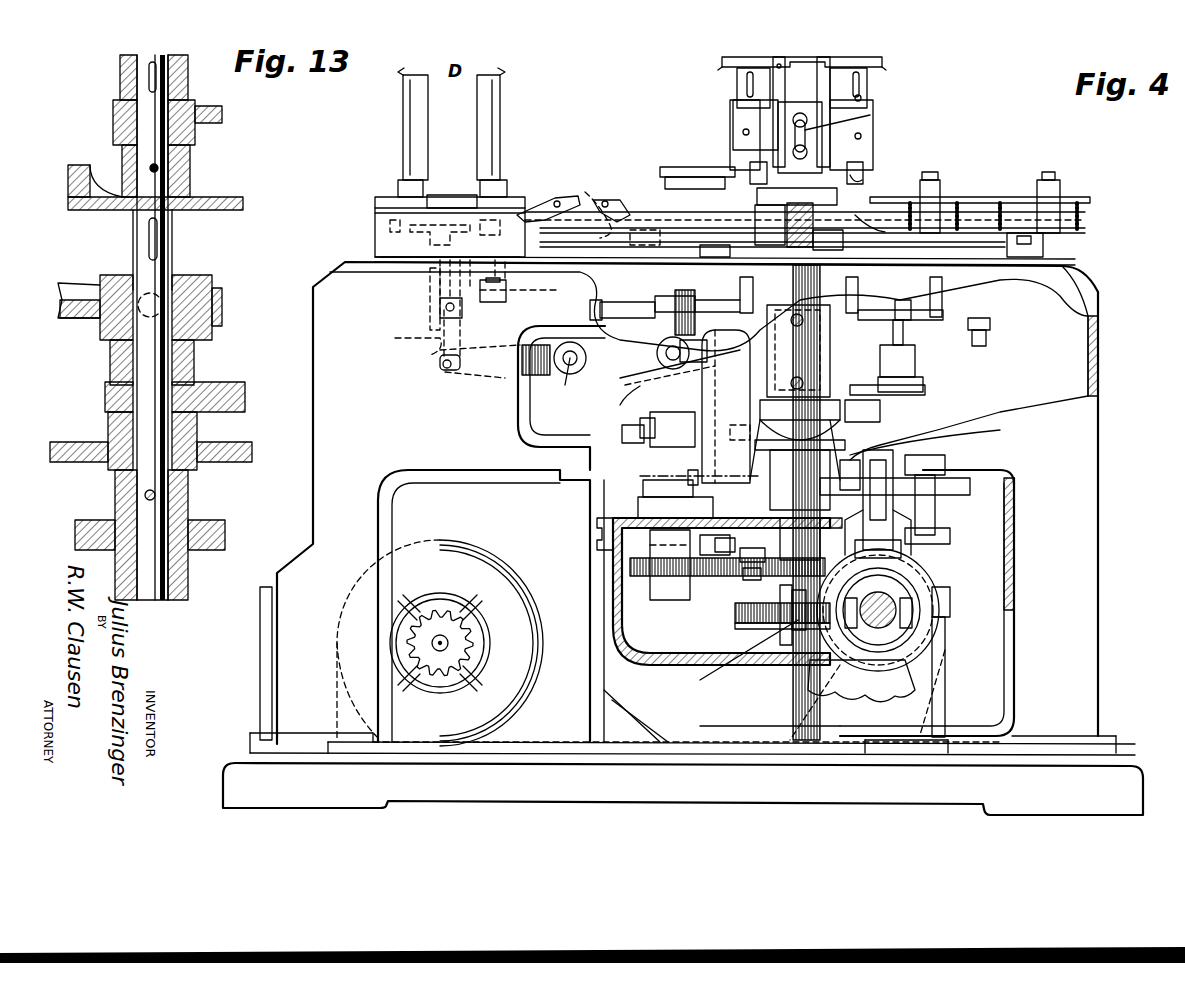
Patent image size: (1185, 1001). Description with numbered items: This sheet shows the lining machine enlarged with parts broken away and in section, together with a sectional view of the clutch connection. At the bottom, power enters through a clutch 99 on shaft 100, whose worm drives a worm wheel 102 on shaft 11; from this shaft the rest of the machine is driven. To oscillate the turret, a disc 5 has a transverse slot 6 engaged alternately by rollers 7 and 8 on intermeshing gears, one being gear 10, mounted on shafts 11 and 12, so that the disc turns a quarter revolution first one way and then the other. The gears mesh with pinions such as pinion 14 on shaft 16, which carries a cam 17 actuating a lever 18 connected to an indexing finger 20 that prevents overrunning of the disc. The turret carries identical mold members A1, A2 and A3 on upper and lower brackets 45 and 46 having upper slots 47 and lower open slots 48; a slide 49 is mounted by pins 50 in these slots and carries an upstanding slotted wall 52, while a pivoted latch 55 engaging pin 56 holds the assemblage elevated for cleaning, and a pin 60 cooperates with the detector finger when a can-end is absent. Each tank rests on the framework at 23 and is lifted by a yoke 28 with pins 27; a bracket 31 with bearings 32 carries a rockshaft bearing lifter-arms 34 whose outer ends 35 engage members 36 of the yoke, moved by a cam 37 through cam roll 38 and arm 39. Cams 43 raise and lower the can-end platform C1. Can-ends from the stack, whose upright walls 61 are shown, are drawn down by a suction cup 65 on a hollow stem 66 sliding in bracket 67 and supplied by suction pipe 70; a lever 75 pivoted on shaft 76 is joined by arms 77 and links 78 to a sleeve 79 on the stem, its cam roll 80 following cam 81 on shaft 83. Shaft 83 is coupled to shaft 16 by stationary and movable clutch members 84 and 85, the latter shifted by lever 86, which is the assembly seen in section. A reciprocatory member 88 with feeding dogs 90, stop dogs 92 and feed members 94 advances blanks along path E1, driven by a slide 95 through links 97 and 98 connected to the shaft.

In FIG. 13, the link 98 is at (120, 72).
In FIG. 4, the link 98 is at (645, 318).
In FIG. 13, the cam 81 is at (82, 165).
In FIG. 4, the cam 81 is at (625, 400).
In FIG. 13, the shaft 83 is at (133, 240).
In FIG. 13, the movable clutch member 85 is at (200, 280).
In FIG. 13, the stationary clutch member 84 is at (194, 360).
In FIG. 4, the stationary clutch member 84 is at (622, 437).
In FIG. 13, the cam 17 is at (245, 394).
In FIG. 4, the cam 17 is at (660, 488).
In FIG. 13, the pinion 14 is at (205, 552).
In FIG. 4, the pinion 14 is at (640, 578).
In FIG. 13, the shaft 16 is at (148, 595).
In FIG. 4, the shaft 16 is at (662, 595).
In FIG. 4, the disc 5 is at (760, 580).
In FIG. 4, the transverse slot 6 is at (740, 565).
In FIG. 4, the roller 7 is at (738, 608).
In FIG. 4, the roller 8 is at (920, 540).
In FIG. 4, the gear 10 is at (770, 620).
In FIG. 4, the shaft 11 is at (785, 620).
In FIG. 4, the shaft 12 is at (798, 630).
In FIG. 4, the lever 18 is at (700, 476).
In FIG. 4, the indexing finger 20 is at (728, 556).
In FIG. 4, the framework rest 23 is at (986, 262).
In FIG. 4, the pin 27 is at (740, 290).
In FIG. 4, the yoke 28 is at (938, 310).
In FIG. 4, the bracket 31 is at (830, 460).
In FIG. 4, the bearing 32 is at (842, 355).
In FIG. 4, the lifter-arm 34 is at (740, 395).
In FIG. 4, the outer end of lifter-arm 35 is at (707, 345).
In FIG. 4, the yoke member 36 is at (695, 296).
In FIG. 4, the cam 37 is at (905, 440).
In FIG. 4, the cam roll 38 is at (880, 412).
In FIG. 4, the arm 39 is at (925, 390).
In FIG. 4, the cam 43 is at (728, 437).
In FIG. 4, the upper bracket 45 is at (867, 80).
In FIG. 4, the lower bracket 46 is at (757, 165).
In FIG. 4, the upper slot 47 is at (737, 80).
In FIG. 4, the lower open slot 48 is at (865, 170).
In FIG. 4, the slide 49 is at (735, 135).
In FIG. 4, the pin 50 is at (862, 100).
In FIG. 4, the upstanding slotted wall 52 is at (870, 115).
In FIG. 4, the pivoted latch 55 is at (860, 60).
In FIG. 4, the pin 56 is at (862, 136).
In FIG. 4, the pin 60 is at (771, 216).
In FIG. 4, the upright wall 61 is at (403, 114).
In FIG. 4, the suction cup 65 is at (430, 250).
In FIG. 4, the hollow stem 66 is at (509, 288).
In FIG. 4, the bracket 67 is at (420, 318).
In FIG. 4, the suction pipe 70 is at (395, 342).
In FIG. 4, the lever 75 is at (657, 353).
In FIG. 4, the shaft 76 is at (554, 372).
In FIG. 4, the arm 77 is at (476, 380).
In FIG. 4, the link 78 is at (440, 358).
In FIG. 4, the sleeve 79 is at (440, 300).
In FIG. 4, the cam roll 80 is at (622, 380).
In FIG. 4, the lever 86 is at (650, 420).
In FIG. 4, the reciprocatory member 88 is at (638, 228).
In FIG. 4, the spring-pressed feeding dog 90 is at (585, 192).
In FIG. 4, the stop dog 92 is at (540, 200).
In FIG. 4, the feed member 94 is at (375, 236).
In FIG. 4, the slide 95 is at (510, 272).
In FIG. 4, the link 97 is at (566, 290).
In FIG. 4, the clutch 99 is at (918, 636).
In FIG. 4, the shaft 100 is at (878, 610).
In FIG. 4, the worm wheel 102 is at (815, 655).
In FIG. 4, the mold member A1 is at (682, 166).
In FIG. 4, the mold member A2 is at (790, 108).
In FIG. 4, the mold member A3 is at (935, 172).
In FIG. 4, the can-end platform C1 is at (850, 235).
In FIG. 4, the can-end advancing path E1 is at (603, 184).